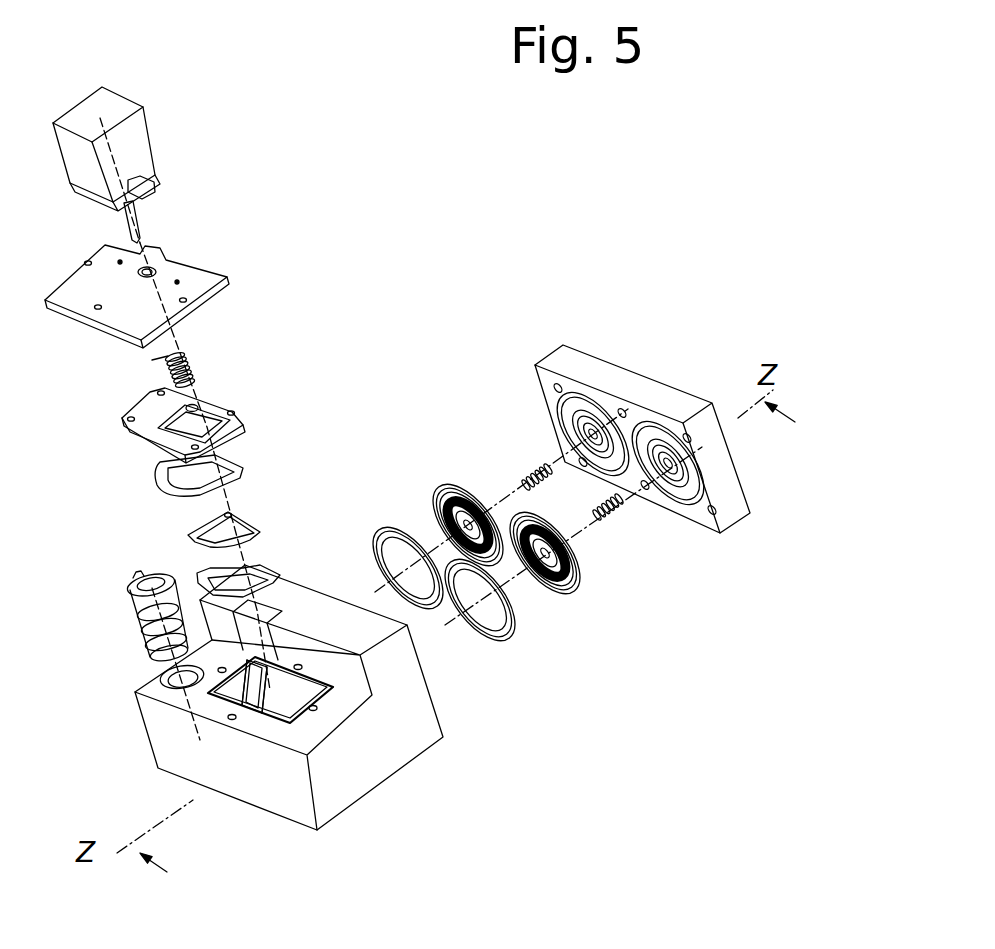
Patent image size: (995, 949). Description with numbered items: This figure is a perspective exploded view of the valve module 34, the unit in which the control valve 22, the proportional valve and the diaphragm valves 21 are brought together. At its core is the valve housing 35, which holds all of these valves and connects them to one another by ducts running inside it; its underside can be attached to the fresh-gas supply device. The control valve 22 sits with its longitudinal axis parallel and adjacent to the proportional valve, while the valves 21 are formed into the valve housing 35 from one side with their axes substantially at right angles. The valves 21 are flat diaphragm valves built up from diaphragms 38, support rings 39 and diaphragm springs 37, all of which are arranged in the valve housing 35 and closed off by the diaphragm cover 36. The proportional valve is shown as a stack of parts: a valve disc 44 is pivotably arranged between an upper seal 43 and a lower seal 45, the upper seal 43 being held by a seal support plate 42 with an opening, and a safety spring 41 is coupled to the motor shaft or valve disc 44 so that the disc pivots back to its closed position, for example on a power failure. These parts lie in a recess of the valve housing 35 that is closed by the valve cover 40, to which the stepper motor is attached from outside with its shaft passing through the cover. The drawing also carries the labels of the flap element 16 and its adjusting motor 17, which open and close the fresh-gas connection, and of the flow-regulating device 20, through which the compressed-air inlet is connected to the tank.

The flap element 16 is at (215, 100).
The adjusting motor 17 is at (142, 165).
The valve cover 40 is at (190, 288).
The safety spring 41 is at (192, 363).
The seal support plate 42 is at (220, 420).
The upper seal 43 is at (237, 468).
The valve disc 44 is at (245, 525).
The lower seal 45 is at (267, 577).
The control valve 22 is at (132, 605).
The valve housing 35 is at (248, 760).
The flow-regulating device 20 is at (415, 382).
The valve 21 is at (505, 349).
The diaphragm cover 36 is at (593, 378).
The diaphragm spring 37 is at (548, 472).
The diaphragm 38 is at (556, 529).
The support ring 39 is at (427, 608).
The valve module 34 is at (548, 774).